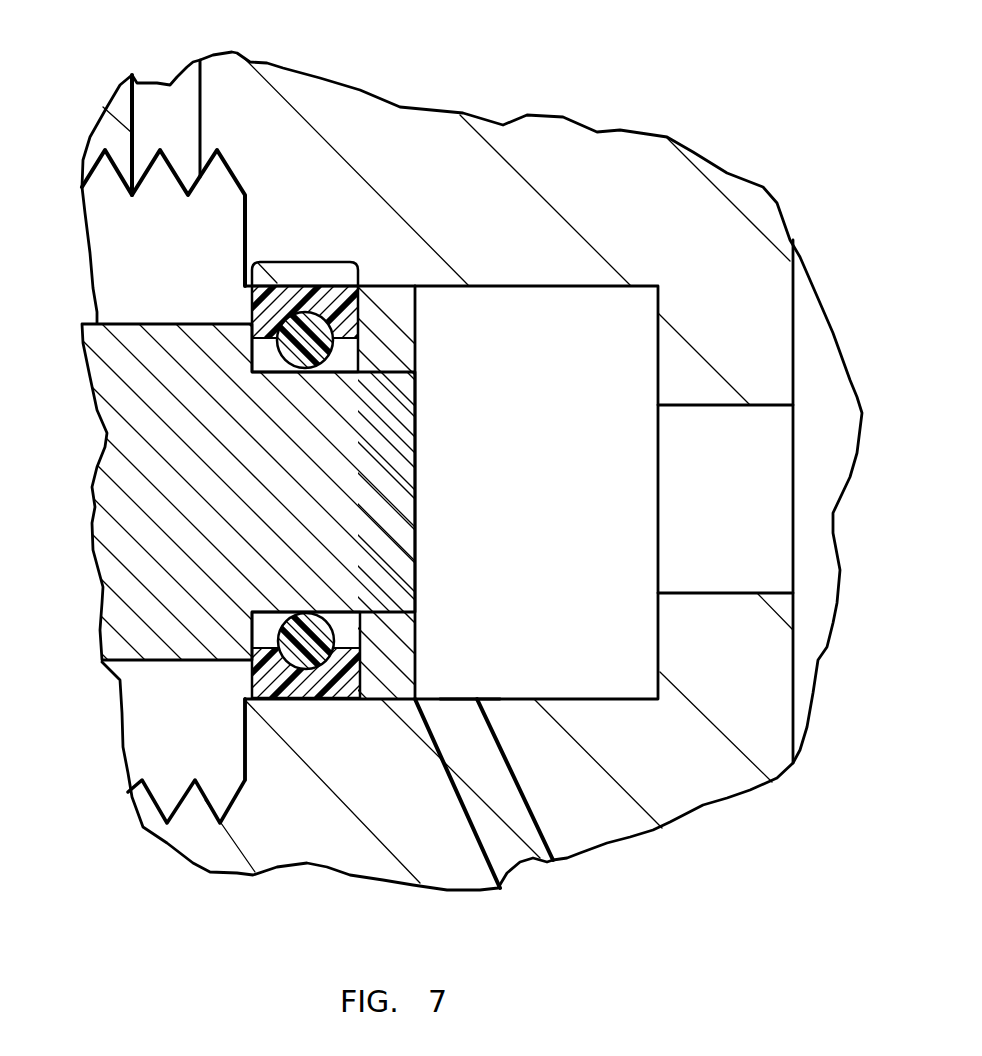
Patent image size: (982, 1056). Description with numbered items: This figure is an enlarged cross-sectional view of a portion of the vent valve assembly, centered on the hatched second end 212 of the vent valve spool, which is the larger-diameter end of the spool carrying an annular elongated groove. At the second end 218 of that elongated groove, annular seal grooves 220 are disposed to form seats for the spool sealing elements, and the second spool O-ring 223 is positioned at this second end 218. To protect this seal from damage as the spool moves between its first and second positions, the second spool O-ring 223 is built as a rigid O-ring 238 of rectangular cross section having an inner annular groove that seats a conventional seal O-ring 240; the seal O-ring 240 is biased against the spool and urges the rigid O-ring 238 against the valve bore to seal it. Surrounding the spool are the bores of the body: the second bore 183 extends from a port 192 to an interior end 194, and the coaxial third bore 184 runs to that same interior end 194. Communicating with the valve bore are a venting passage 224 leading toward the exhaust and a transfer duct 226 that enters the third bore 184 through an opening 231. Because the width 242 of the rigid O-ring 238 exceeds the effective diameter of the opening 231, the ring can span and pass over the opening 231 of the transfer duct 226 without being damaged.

The second bore 183 is at (730, 405).
The third bore 184 is at (548, 288).
The port 192 is at (793, 445).
The interior end 194 is at (663, 592).
The second end 212 is at (152, 323).
The second end 218 is at (398, 699).
The annular seal grooves 220 is at (343, 372).
The second spool O-ring 223 is at (273, 699).
The venting passage 224 is at (167, 123).
The transfer duct 226 is at (483, 777).
The opening 231 is at (468, 702).
The rigid O-ring 238 is at (293, 327).
The seal O-ring 240 is at (257, 300).
The width 242 is at (308, 262).